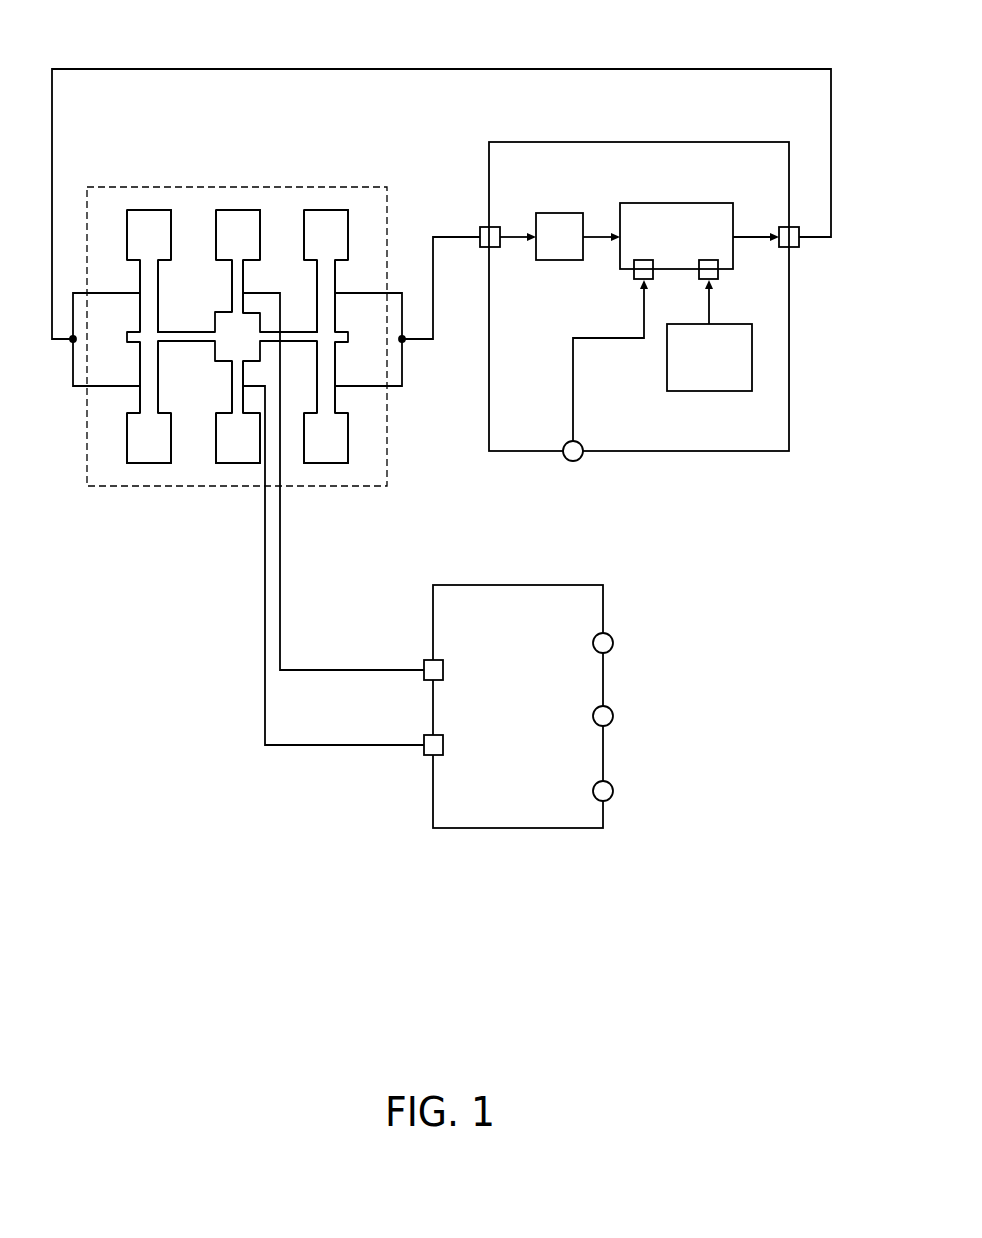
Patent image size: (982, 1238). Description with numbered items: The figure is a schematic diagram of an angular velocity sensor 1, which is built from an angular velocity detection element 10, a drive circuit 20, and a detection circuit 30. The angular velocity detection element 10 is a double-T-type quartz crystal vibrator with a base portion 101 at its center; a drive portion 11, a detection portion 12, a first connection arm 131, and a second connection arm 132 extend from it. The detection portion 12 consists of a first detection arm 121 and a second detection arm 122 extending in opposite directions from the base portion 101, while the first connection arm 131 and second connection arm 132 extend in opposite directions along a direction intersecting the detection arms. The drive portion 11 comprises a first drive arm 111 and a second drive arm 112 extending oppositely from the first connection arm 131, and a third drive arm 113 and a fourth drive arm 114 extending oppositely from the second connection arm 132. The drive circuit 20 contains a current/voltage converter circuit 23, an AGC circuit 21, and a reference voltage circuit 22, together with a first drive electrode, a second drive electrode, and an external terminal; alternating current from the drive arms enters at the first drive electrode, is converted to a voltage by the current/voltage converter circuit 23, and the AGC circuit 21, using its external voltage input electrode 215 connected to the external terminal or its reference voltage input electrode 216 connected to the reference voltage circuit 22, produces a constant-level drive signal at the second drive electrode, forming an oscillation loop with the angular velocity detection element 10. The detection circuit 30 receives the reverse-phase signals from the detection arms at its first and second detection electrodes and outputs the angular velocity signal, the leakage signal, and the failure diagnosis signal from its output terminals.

The angular velocity sensor 1 is at (796, 40).
The angular velocity detection element 10 is at (326, 187).
The drive portion 11 is at (238, 336).
The detection portion 12 is at (220, 336).
The drive circuit 20 is at (737, 142).
The AGC circuit 21 is at (643, 203).
The reference voltage circuit 22 is at (706, 391).
The current/voltage converter circuit 23 is at (558, 213).
The detection circuit 30 is at (548, 585).
The base portion 101 is at (227, 346).
The first drive arm 111 is at (145, 277).
The second drive arm 112 is at (143, 397).
The third drive arm 113 is at (333, 277).
The fourth drive arm 114 is at (333, 397).
The first detection arm 121 is at (230, 277).
The second detection arm 122 is at (232, 397).
The first connection arm 131 is at (188, 327).
The second connection arm 132 is at (297, 327).
The external voltage input electrode 215 is at (634, 272).
The reference voltage input electrode 216 is at (719, 272).